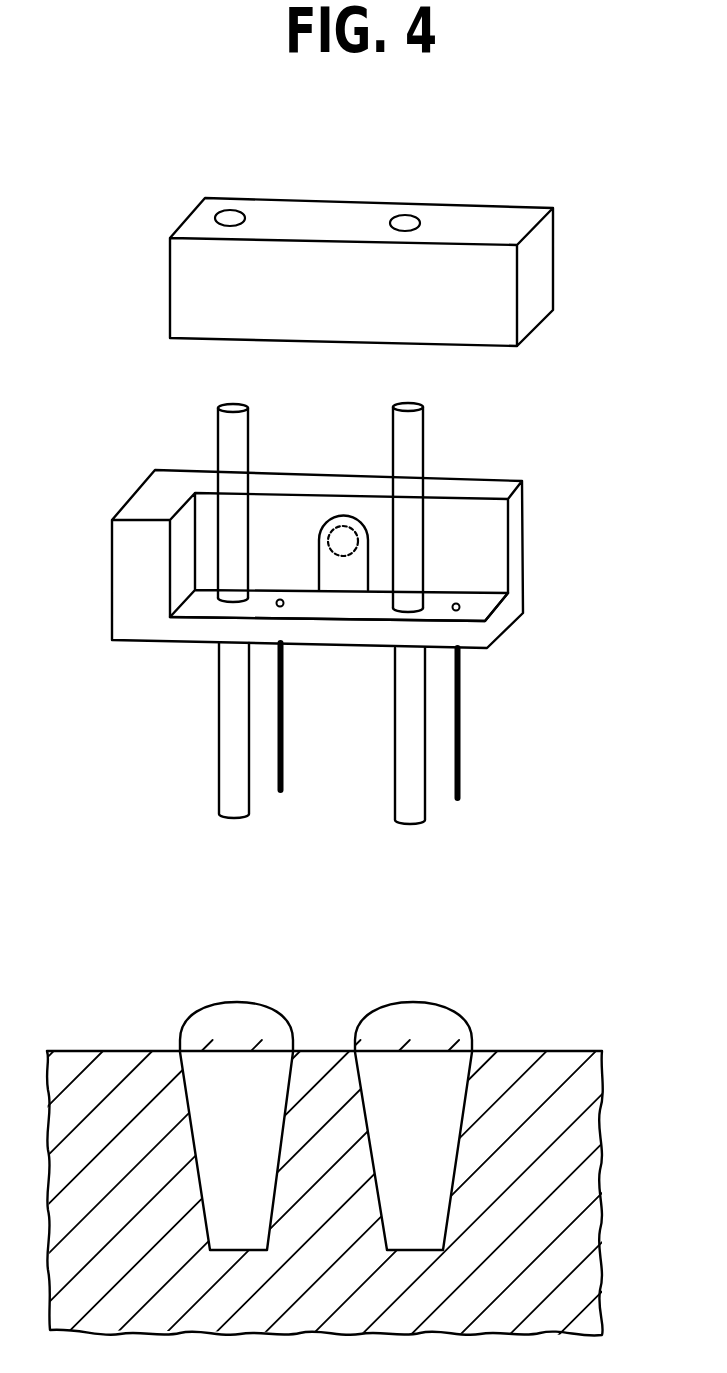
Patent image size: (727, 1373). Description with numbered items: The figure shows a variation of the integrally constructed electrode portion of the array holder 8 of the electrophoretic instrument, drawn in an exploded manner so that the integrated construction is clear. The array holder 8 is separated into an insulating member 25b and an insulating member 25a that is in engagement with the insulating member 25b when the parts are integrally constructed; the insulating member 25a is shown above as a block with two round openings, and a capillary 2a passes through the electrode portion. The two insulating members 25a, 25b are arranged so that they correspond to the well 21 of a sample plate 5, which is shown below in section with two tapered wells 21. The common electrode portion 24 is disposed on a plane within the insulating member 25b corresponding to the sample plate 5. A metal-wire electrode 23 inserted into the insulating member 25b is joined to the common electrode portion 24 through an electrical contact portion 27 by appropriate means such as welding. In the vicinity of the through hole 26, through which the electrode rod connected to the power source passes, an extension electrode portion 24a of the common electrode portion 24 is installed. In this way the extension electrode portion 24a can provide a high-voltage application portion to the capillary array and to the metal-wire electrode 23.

The sample plate 5 is at (535, 1051).
The well 21 is at (453, 1173).
The array holder 8 is at (112, 542).
The insulating member 25a is at (535, 275).
The insulating member 25b is at (510, 496).
The capillary 2a is at (423, 431).
The metal-wire electrode 23 is at (462, 747).
The common electrode portion 24 is at (492, 600).
The extension electrode portion 24a is at (345, 518).
The through hole 26 is at (349, 543).
The electrical contact portion 27 is at (460, 607).